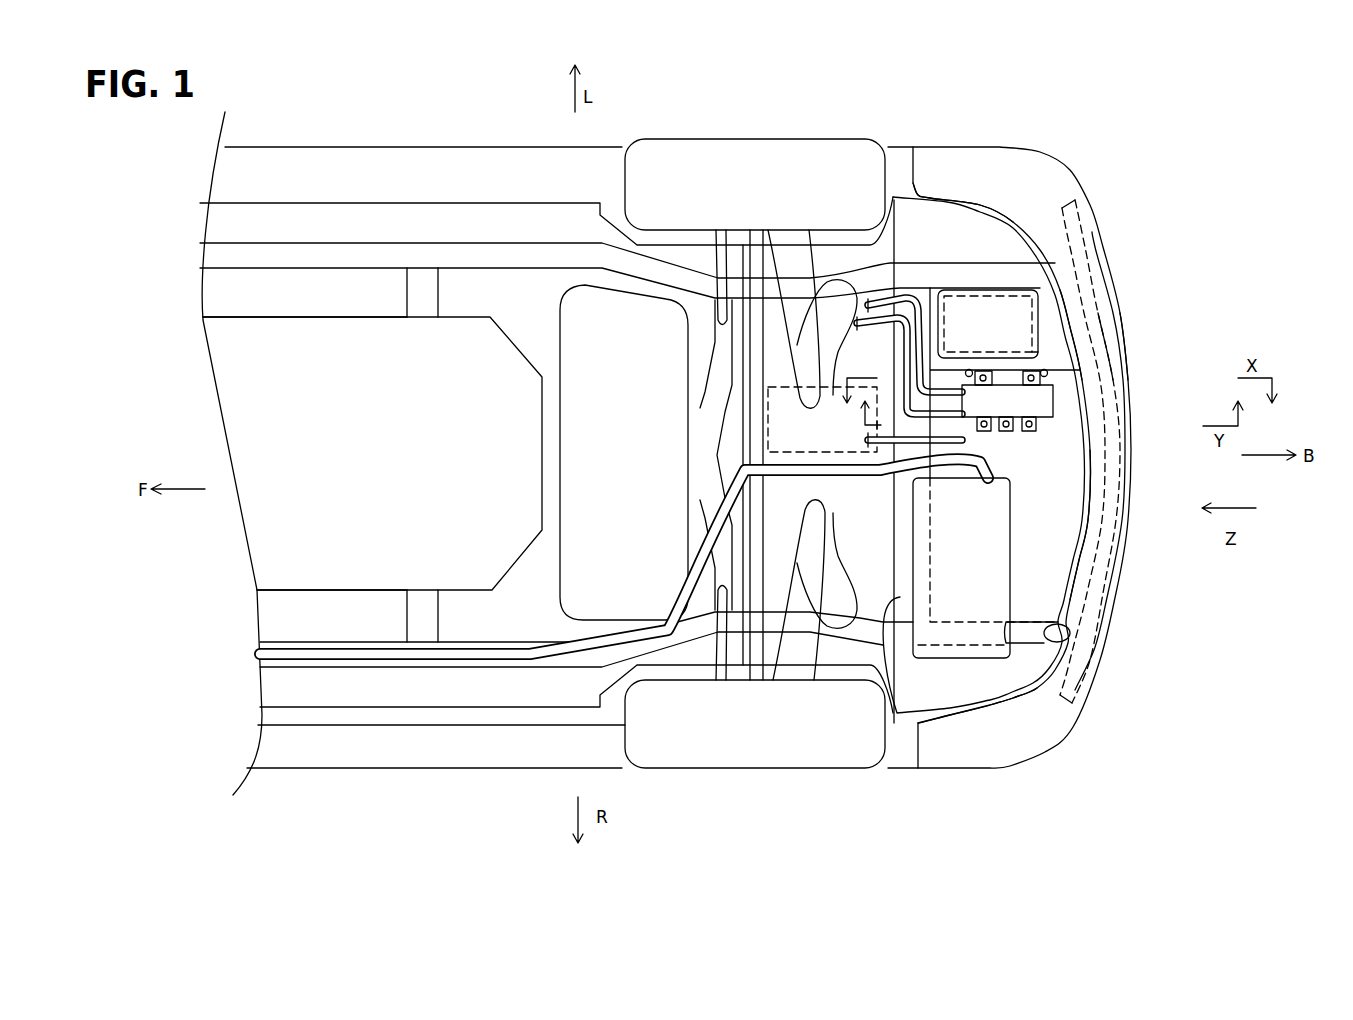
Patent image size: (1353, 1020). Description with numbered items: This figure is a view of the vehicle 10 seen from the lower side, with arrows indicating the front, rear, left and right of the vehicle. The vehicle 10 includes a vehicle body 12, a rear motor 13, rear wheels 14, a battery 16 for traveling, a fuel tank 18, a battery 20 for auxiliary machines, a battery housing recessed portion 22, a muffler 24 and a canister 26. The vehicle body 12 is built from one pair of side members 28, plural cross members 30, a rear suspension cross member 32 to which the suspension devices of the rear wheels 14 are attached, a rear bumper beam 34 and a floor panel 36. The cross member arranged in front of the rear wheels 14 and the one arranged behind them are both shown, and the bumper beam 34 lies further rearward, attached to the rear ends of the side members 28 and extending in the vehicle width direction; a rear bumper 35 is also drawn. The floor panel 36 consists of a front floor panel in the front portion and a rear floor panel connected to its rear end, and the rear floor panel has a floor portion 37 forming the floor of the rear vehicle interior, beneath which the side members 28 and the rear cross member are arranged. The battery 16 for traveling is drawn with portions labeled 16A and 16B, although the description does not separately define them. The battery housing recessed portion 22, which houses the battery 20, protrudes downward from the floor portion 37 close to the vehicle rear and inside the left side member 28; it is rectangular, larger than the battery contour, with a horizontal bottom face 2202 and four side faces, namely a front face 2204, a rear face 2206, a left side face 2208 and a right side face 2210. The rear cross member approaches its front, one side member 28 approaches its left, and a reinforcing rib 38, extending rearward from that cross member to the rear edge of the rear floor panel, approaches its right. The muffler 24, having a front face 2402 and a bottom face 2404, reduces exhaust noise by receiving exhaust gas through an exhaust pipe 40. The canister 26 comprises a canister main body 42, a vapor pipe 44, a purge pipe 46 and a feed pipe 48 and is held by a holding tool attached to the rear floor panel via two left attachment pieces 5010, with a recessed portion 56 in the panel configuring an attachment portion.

The vehicle 10 is at (323, 96).
The vehicle body 12 is at (408, 146).
The rear motor 13 is at (793, 387).
The rear wheels 14 is at (793, 138).
The battery for traveling 16 is at (273, 304).
The floor panel center portion 16A is at (362, 395).
The floor panel side portion 16B is at (308, 316).
The fuel tank 18 is at (558, 316).
The battery for auxiliary machines 20 is at (1040, 292).
The battery housing recessed portion 22 is at (1056, 302).
The muffler 24 is at (985, 599).
The canister 26 is at (1053, 416).
The side members 28 is at (538, 242).
The cross members 30 is at (408, 267).
The suspension cross member 32 is at (838, 533).
The bumper beam 34 is at (1110, 298).
The rear bumper 35 is at (1122, 317).
The floor panel 36 is at (599, 196).
The floor portion 37 is at (943, 683).
The reinforcing rib 38 is at (1055, 401).
The exhaust pipe 40 is at (878, 465).
The canister main body 42 is at (1095, 448).
The vapor pipe 44 is at (880, 450).
The purge pipe 46 is at (920, 318).
The feed pipe 48 is at (888, 283).
The recessed portion 56 is at (1006, 432).
The bottom face 2202 is at (963, 300).
The front face 2204 is at (923, 305).
The rear face 2206 is at (1078, 329).
The left side face 2208 is at (987, 290).
The right side face 2210 is at (1022, 358).
The front face 2402 is at (905, 580).
The bottom face 2404 is at (1060, 590).
The left attachment pieces 5010 is at (1136, 382).